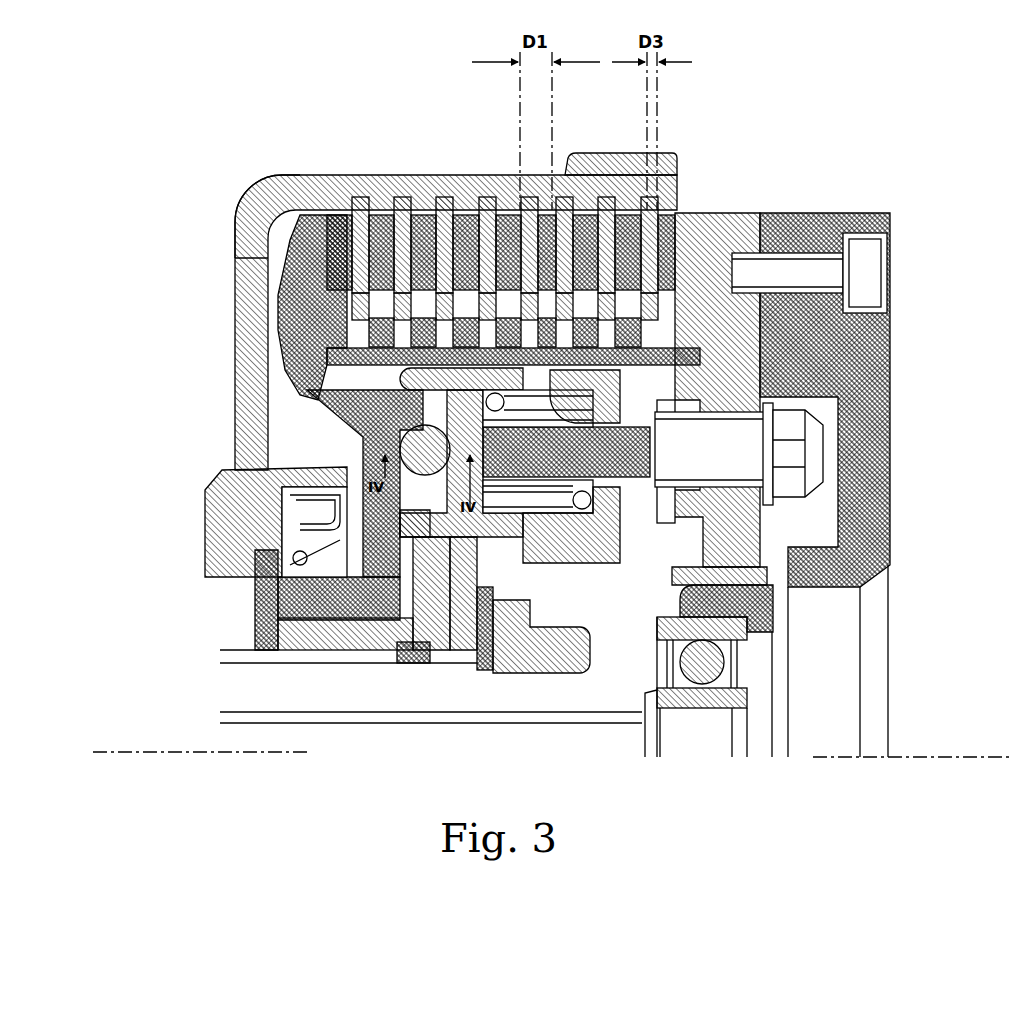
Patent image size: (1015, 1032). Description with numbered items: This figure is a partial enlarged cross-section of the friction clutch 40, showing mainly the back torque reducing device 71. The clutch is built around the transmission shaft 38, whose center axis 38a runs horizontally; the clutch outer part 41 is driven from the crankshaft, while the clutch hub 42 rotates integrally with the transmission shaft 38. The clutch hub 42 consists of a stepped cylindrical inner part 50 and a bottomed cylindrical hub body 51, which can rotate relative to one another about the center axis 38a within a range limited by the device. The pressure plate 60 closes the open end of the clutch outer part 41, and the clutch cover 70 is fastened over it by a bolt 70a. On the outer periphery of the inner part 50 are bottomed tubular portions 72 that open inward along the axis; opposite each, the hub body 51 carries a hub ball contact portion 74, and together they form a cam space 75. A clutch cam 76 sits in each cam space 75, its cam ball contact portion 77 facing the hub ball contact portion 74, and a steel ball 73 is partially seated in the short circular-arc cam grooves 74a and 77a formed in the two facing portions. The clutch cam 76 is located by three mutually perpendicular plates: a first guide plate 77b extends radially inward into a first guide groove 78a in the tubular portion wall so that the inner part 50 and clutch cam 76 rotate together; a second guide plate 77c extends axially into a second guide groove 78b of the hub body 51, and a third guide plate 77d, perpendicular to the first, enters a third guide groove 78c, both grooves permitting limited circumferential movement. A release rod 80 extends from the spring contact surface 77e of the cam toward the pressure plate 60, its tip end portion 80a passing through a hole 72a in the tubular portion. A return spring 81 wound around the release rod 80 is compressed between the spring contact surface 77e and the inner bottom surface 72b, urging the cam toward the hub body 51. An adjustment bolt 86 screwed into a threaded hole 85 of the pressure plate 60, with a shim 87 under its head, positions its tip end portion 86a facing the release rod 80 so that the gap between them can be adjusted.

The transmission shaft 38 is at (235, 690).
The center axis 38a is at (133, 752).
The friction clutch 40 is at (842, 132).
The clutch outer part 41 is at (235, 226).
The clutch hub 42 is at (280, 225).
The inner part 50 is at (343, 637).
The hub body 51 is at (290, 355).
The pressure plate 60 is at (722, 220).
The clutch cover 70 is at (870, 665).
The bolt 70a is at (862, 270).
The back torque reducing device 71 is at (613, 655).
The bottomed tubular portion 72 is at (558, 540).
The hole 72a is at (603, 396).
The inner bottom surface 72b is at (541, 384).
The steel ball 73 is at (400, 447).
The hub ball contact portion 74 is at (345, 462).
The cam groove 74a is at (400, 500).
The cam space 75 is at (503, 300).
The clutch cam 76 is at (607, 390).
The cam ball contact portion 77 is at (413, 537).
The cam groove 77a is at (390, 418).
The first guide plate 77b is at (457, 640).
The second guide plate 77c is at (420, 378).
The third guide plate 77d is at (420, 593).
The spring contact surface 77e is at (566, 452).
The first guide groove 78a is at (522, 673).
The second guide groove 78b is at (405, 352).
The third guide groove 78c is at (413, 557).
The release rod 80 is at (605, 533).
The tip end portion 80a is at (630, 452).
The return spring 81 is at (578, 512).
The threaded hole 85 is at (740, 480).
The adjustment bolt 86 is at (810, 448).
The tip end portion 86a is at (663, 453).
The shim 87 is at (767, 397).